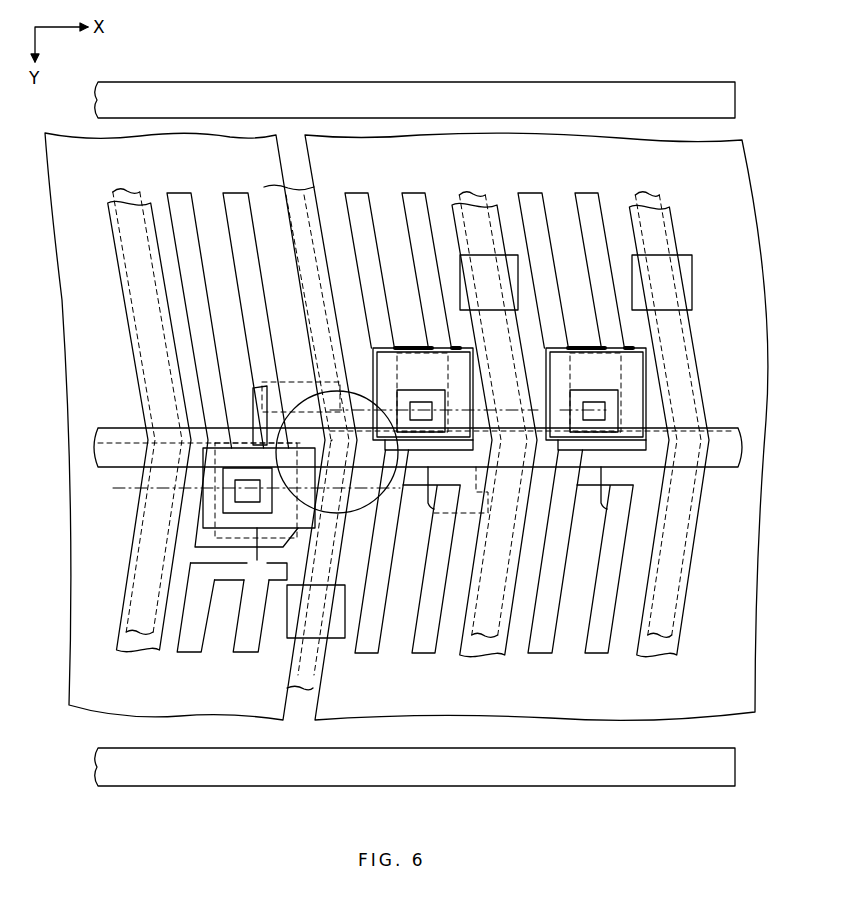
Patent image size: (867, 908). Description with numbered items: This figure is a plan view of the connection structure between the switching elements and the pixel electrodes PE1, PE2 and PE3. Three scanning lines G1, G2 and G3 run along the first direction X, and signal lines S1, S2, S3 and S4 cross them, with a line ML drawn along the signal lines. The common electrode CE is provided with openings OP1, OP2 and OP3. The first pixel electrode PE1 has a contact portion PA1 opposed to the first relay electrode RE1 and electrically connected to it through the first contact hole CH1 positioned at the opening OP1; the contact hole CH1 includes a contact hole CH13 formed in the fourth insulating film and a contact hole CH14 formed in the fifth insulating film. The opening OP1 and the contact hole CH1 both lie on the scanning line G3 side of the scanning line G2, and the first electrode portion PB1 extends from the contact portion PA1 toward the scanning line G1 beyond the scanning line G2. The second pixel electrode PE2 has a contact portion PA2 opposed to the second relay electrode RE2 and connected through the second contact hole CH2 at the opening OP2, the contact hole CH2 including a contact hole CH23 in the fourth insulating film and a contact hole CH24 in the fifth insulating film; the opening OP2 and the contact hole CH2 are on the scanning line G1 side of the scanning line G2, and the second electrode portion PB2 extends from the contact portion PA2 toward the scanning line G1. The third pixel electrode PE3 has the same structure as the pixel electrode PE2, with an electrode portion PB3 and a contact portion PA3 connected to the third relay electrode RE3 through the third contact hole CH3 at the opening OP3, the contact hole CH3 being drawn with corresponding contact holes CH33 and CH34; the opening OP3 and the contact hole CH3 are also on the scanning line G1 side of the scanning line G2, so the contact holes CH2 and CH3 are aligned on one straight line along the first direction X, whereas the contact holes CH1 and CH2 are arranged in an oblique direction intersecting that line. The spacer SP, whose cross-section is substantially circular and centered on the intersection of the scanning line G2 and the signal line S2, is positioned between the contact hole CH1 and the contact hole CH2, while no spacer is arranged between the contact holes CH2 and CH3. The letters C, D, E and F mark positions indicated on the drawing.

The scanning line G1 is at (97, 100).
The scanning line G2 is at (97, 442).
The scanning line G3 is at (97, 767).
The source line S1 is at (130, 656).
The signal line S2 is at (299, 692).
The source line S3 is at (479, 662).
The source line S4 is at (655, 660).
The metal line ML is at (118, 642).
The common electrode CE is at (237, 705).
The first pixel electrode PE1 is at (232, 422).
The second pixel electrode PE2 is at (408, 422).
The third pixel electrode PE3 is at (573, 422).
The first electrode portion PB1 is at (240, 193).
The second electrode portion PB2 is at (427, 193).
The belt-shaped portion of pixel electrode PB3 is at (600, 193).
The first contact portion PA1 is at (228, 550).
The second contact portion PA2 is at (356, 492).
The third contact portion PA3 is at (531, 495).
The first relay electrode RE1 is at (192, 560).
The second relay electrode RE2 is at (413, 482).
The third relay electrode RE3 is at (586, 482).
The first contact hole CH1 is at (275, 350).
The second contact hole CH2 is at (447, 310).
The third contact hole CH3 is at (628, 284).
The contact hole CH13 is at (246, 480).
The contact hole CH14 is at (218, 470).
The contact hole CH23 is at (421, 400).
The contact hole CH24 is at (405, 400).
The contact hole CH33 is at (594, 400).
The contact hole CH34 is at (578, 400).
The opening OP1 is at (287, 603).
The opening OP2 is at (465, 348).
The opening OP3 is at (634, 348).
The spacer SP is at (285, 445).
The position C is at (315, 559).
The position D is at (256, 554).
The section line E is at (246, 489).
The section line F is at (468, 410).